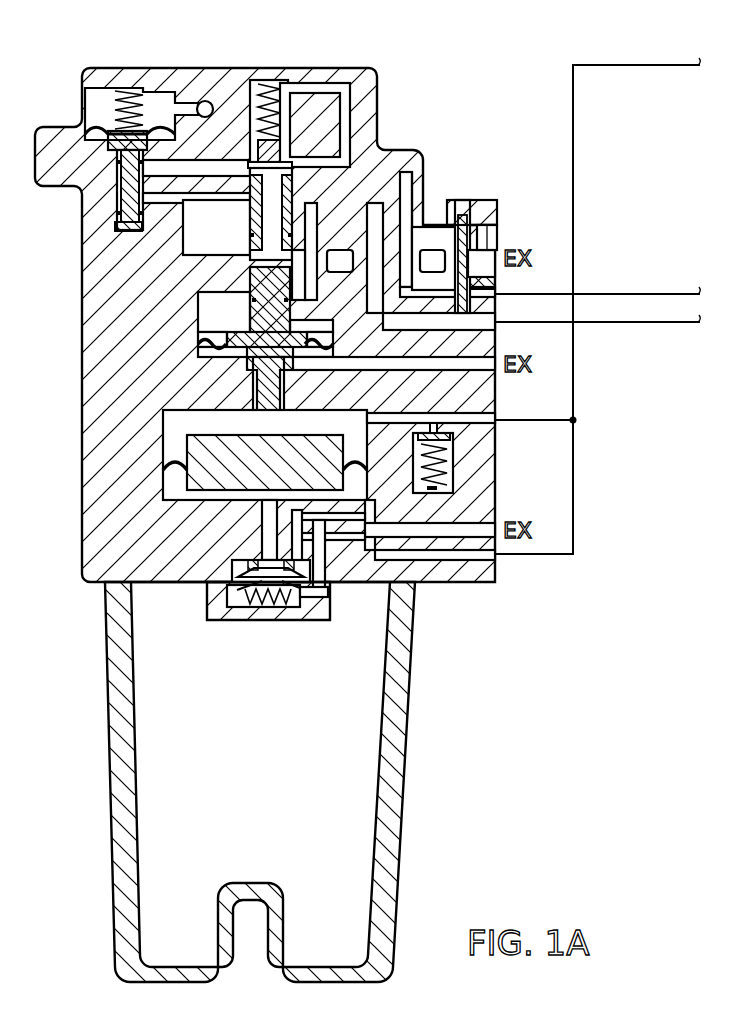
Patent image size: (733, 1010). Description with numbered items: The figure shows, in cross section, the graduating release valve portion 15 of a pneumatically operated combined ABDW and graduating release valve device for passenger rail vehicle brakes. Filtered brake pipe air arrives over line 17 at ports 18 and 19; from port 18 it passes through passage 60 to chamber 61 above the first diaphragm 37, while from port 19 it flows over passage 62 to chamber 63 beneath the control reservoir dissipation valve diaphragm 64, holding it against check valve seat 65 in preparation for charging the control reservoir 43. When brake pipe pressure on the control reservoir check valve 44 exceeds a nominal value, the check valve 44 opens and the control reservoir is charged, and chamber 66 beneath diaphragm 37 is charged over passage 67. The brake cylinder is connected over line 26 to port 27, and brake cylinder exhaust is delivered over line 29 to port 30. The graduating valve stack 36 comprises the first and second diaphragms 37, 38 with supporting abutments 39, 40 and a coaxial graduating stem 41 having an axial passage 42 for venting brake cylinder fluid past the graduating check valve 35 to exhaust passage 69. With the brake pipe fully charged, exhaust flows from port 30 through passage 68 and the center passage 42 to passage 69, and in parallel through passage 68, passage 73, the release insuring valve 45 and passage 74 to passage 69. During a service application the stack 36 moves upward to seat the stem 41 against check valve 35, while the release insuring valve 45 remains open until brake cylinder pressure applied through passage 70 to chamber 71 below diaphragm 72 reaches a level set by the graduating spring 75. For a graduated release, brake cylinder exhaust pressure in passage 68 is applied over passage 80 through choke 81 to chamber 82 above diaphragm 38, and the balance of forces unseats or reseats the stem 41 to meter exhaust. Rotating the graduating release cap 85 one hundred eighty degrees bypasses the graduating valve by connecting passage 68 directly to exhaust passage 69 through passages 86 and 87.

The graduating release valve portion 15 is at (214, 66).
The line 17 is at (573, 200).
The port 18 is at (493, 420).
The port 19 is at (495, 560).
The line 26 is at (630, 294).
The port 27 is at (494, 296).
The line 29 is at (638, 322).
The port 30 is at (493, 326).
The graduating check valve 35 is at (297, 150).
The graduating valve stack 36 is at (232, 308).
The first diaphragm 37 is at (165, 470).
The second diaphragm 38 is at (228, 372).
The supporting abutment 39 is at (163, 425).
The supporting abutment 40 is at (232, 333).
The graduating stem 41 is at (246, 222).
The axial passage 42 is at (262, 248).
The control reservoir 43 is at (403, 785).
The control reservoir check valve 44 is at (445, 456).
The release insuring valve 45 is at (82, 190).
The passage 60 is at (475, 425).
The chamber 61 is at (397, 422).
The passage 62 is at (453, 568).
The chamber 63 is at (282, 598).
The control reservoir dissipation valve diaphragm 64 is at (237, 588).
The check valve seat 65 is at (250, 567).
The chamber 66 is at (167, 487).
The passage 67 is at (275, 503).
The passage 68 is at (392, 172).
The exhaust passage 69 is at (496, 278).
The passage 70 is at (413, 195).
The chamber 71 is at (92, 145).
The diaphragm 72 is at (92, 114).
The passage 73 is at (197, 172).
The passage 74 is at (180, 262).
The graduating spring 75 is at (128, 90).
The passage 80 is at (318, 238).
The choke 81 is at (322, 287).
The chamber 82 is at (327, 324).
The graduating release cap 85 is at (477, 205).
The passage 86 is at (497, 213).
The passage 87 is at (488, 241).